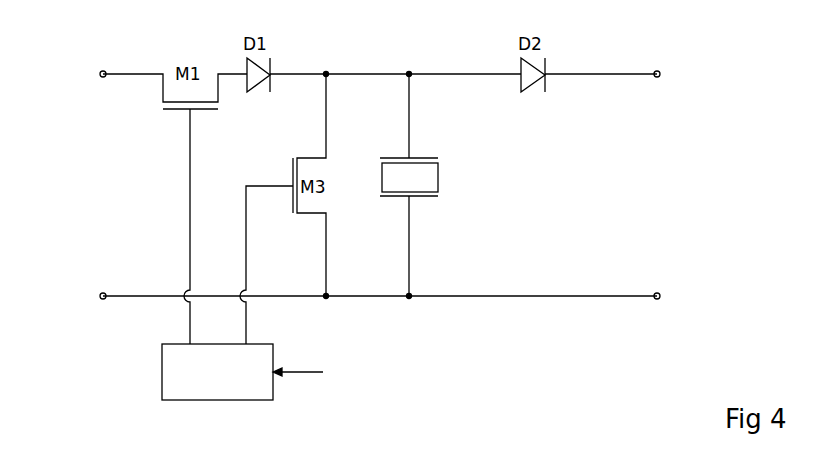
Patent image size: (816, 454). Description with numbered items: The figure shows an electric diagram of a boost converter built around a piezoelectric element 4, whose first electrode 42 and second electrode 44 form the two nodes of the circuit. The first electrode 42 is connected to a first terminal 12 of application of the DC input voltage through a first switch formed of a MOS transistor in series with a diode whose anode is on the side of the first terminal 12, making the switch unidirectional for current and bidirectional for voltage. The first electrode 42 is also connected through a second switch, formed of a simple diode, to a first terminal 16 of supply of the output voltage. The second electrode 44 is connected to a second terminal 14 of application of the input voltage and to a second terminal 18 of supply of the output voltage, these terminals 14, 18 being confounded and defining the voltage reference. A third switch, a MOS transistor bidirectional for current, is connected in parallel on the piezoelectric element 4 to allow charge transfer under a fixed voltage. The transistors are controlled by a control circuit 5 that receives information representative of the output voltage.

The first terminal 12 is at (104, 70).
The second terminal 14 is at (101, 300).
The first terminal of supply 16 is at (659, 70).
The second terminal of supply 18 is at (659, 300).
The first electrode 42 is at (409, 70).
The second electrode 44 is at (412, 292).
The piezoelectric element 4 is at (455, 172).
The circuit 5 is at (250, 402).